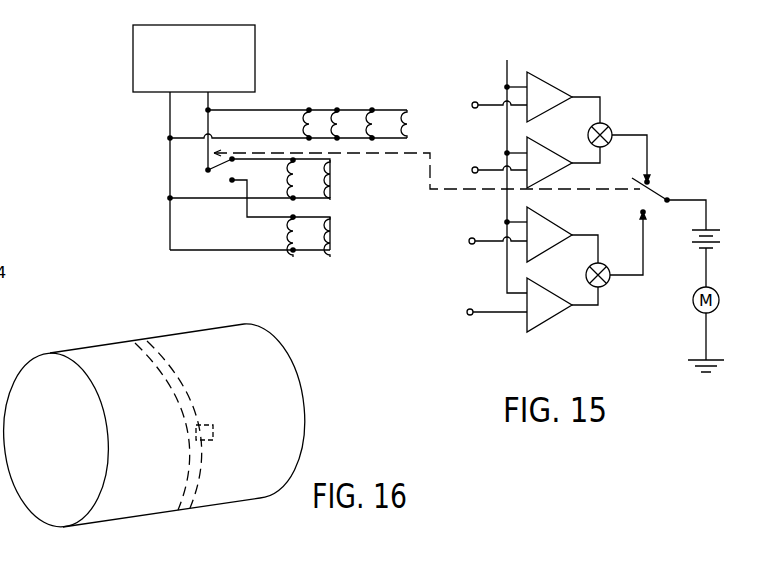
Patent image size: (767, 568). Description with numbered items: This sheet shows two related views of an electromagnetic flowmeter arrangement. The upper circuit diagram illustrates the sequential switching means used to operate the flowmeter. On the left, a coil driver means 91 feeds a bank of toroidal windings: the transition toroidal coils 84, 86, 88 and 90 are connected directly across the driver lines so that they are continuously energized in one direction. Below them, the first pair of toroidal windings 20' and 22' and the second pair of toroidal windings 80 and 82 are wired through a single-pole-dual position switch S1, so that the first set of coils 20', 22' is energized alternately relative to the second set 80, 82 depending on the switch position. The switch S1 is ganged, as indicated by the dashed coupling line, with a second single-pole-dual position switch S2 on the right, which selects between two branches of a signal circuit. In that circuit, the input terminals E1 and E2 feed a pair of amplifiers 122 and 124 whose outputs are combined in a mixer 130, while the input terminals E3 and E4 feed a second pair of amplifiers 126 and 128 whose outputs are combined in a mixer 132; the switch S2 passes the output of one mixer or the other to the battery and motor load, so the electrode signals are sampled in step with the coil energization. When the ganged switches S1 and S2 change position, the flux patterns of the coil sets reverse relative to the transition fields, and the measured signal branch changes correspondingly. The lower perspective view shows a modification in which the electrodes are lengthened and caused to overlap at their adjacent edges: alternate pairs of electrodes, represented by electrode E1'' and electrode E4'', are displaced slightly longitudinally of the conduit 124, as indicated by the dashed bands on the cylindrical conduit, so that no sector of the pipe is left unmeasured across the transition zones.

In FIG. 15, the driver means 91 is at (133, 56).
In FIG. 15, the transition toroidal winding 84 is at (309, 109).
In FIG. 15, the transition toroidal winding 86 is at (337, 109).
In FIG. 15, the transition toroidal winding 88 is at (372, 109).
In FIG. 15, the transition toroidal winding 90 is at (407, 109).
In FIG. 15, the first toroidal winding 20' is at (271, 180).
In FIG. 15, the first toroidal winding 22' is at (356, 180).
In FIG. 15, the second toroidal winding 80 is at (290, 234).
In FIG. 15, the second toroidal winding 82 is at (334, 239).
In FIG. 15, the single-pole-dual position switch S1 is at (215, 169).
In FIG. 15, the single-pole-dual position switch S2 is at (655, 192).
In FIG. 15, the amplifier 122 is at (545, 80).
In FIG. 15, the conduit 124 is at (548, 156).
In FIG. 16, the conduit 124 is at (297, 404).
In FIG. 15, the amplifier 126 is at (538, 229).
In FIG. 15, the amplifier 128 is at (543, 296).
In FIG. 15, the mixer 130 is at (611, 126).
In FIG. 15, the mixer 132 is at (607, 284).
In FIG. 15, the input signal terminal E1 is at (483, 99).
In FIG. 15, the input signal terminal E2 is at (483, 168).
In FIG. 15, the input signal terminal E3 is at (481, 244).
In FIG. 15, the input signal terminal E4 is at (481, 314).
In FIG. 16, the electrode E1'' is at (132, 381).
In FIG. 16, the electrode E4'' is at (231, 433).